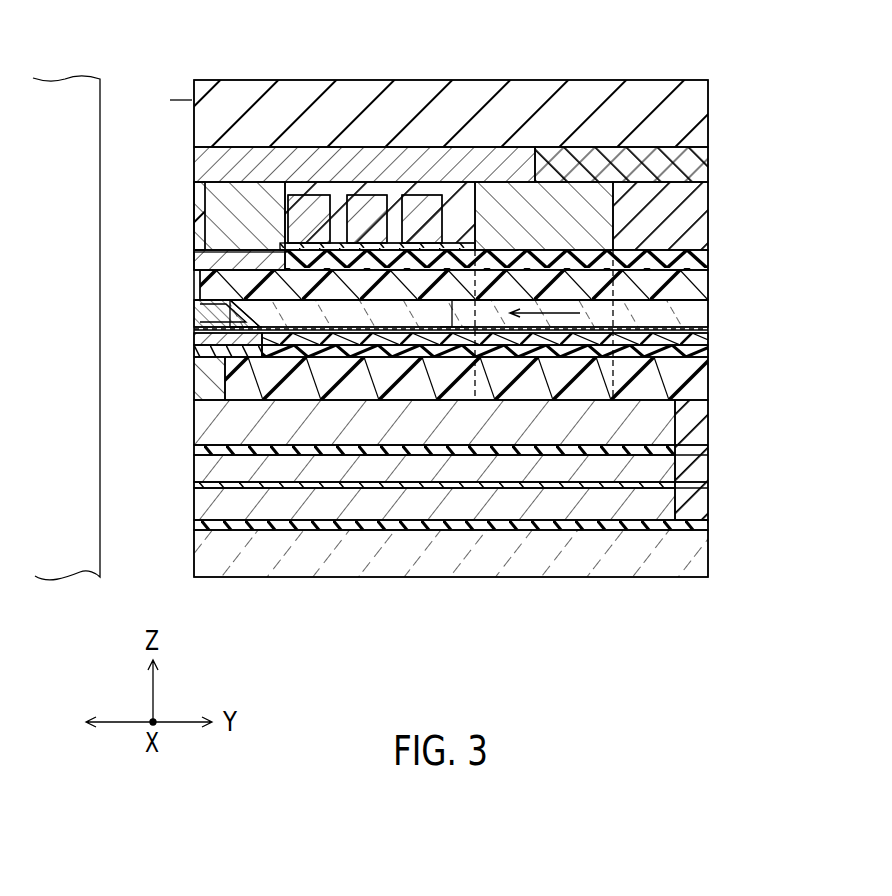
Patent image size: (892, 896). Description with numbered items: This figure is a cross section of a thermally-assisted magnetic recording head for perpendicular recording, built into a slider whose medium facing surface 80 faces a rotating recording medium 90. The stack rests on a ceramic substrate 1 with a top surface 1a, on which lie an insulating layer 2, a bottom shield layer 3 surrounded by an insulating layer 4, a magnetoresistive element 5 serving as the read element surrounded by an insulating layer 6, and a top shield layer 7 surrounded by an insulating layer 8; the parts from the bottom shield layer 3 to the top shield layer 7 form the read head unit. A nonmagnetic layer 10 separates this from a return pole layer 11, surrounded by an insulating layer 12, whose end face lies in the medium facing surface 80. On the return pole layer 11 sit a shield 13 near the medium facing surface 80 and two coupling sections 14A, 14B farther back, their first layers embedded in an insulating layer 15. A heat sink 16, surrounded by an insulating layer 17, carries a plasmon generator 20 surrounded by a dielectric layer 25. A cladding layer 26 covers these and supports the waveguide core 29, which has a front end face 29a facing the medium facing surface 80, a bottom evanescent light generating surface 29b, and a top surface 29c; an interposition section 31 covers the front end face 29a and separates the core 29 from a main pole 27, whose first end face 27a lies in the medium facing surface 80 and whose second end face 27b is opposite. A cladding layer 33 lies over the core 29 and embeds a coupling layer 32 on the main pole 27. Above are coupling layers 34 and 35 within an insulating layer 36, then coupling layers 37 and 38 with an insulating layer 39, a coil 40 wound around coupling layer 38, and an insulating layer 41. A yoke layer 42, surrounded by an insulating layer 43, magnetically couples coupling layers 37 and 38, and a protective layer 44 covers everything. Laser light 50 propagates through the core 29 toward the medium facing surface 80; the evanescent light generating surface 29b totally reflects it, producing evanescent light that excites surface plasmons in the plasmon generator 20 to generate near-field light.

The substrate 1 is at (196, 550).
The top surface 1a is at (196, 525).
The insulating layer 2 is at (706, 555).
The bottom shield layer 3 is at (196, 485).
The insulating layer 4 is at (706, 527).
The magnetoresistive (MR) element 5 is at (196, 469).
The insulating layer 6 is at (706, 503).
The top shield layer 7 is at (196, 450).
The insulating layer 8 is at (706, 468).
The nonmagnetic layer 10 is at (706, 450).
The return pole layer 11 is at (196, 422).
The insulating layer 12 is at (706, 420).
The shield 13 is at (196, 380).
The coupling section 14A is at (608, 380).
The coupling section 14B is at (625, 618).
The insulating layer 15 is at (706, 380).
The heat sink 16 is at (196, 351).
The insulating layer 17 is at (706, 351).
The plasmon generator 20 is at (196, 339).
The dielectric layer 25 is at (706, 339).
The cladding layer 26 is at (706, 329).
The main pole 27 is at (196, 318).
The first end face 27a is at (200, 308).
The second end face 27b is at (240, 330).
The core 29 is at (706, 313).
The front end face 29a is at (230, 300).
The evanescent light generating surface 29b is at (458, 330).
The top surface 29c is at (452, 300).
The interposition section 31 is at (196, 262).
The coupling layer 32 is at (210, 250).
The cladding layer 33 is at (706, 282).
The coupling layer 34 is at (262, 245).
The coupling layer 35 is at (593, 250).
The insulating layer 36 is at (706, 258).
The coupling layer 37 is at (283, 243).
The coupling layer 38 is at (498, 187).
The insulating layer 39 is at (335, 243).
The coil 40 is at (370, 197).
The insulating layer 41 is at (706, 183).
The yoke layer 42 is at (412, 150).
The insulating layer 43 is at (706, 165).
The protective layer 44 is at (706, 108).
The laser light 50 is at (545, 305).
The medium facing surface 80 is at (186, 100).
The recording medium 90 is at (63, 95).